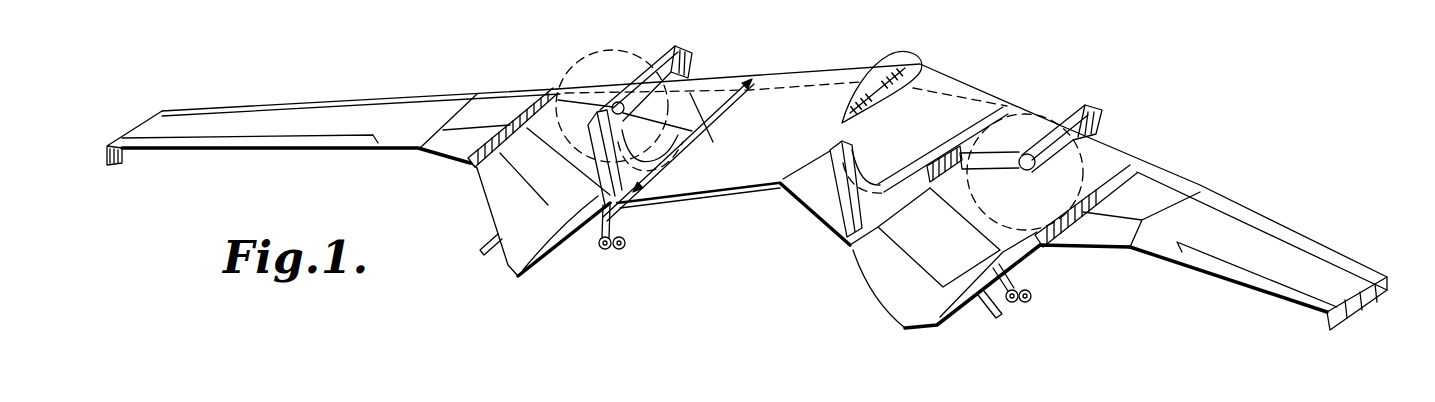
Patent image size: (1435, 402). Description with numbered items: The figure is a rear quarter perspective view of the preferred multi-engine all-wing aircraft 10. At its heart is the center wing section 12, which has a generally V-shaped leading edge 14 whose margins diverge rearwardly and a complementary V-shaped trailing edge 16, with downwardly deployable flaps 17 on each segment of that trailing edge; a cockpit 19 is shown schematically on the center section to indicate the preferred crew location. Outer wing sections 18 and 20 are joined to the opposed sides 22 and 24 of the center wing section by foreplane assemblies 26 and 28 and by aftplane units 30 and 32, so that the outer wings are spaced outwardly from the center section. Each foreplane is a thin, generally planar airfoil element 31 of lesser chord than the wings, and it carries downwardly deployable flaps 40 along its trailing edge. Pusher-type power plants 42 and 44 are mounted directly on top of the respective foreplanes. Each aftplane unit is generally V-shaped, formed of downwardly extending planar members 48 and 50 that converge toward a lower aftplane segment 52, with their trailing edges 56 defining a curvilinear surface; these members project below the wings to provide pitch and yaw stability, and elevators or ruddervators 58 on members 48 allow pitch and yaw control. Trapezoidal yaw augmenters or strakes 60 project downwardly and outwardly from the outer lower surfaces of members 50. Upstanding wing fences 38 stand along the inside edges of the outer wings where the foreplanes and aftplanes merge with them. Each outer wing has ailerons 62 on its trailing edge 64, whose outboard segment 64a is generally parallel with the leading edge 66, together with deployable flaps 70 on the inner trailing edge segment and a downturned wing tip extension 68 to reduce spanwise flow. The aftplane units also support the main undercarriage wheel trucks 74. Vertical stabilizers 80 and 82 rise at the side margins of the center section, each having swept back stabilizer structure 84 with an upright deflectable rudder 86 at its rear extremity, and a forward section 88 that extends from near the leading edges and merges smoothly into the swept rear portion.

The all-wing multi-engine aircraft 10 is at (398, 287).
The center wing section 12 is at (799, 68).
The leading edge 14 is at (847, 63).
The trailing edge 16 is at (775, 190).
The flaps 17 is at (705, 195).
The outer wing section 18 is at (272, 104).
The cockpit 19 is at (906, 62).
The outer wing section 20 is at (1240, 202).
The side of center wing section 22 is at (692, 130).
The side of center wing section 24 is at (927, 166).
The foreplane assembly 26 is at (710, 75).
The foreplane assembly 28 is at (1115, 146).
The aftplane unit 30 is at (505, 267).
The planar element 31 is at (742, 80).
The aftplane unit 32 is at (924, 338).
The wing fences 38 is at (523, 113).
The flaps 40 is at (577, 102).
The power plant 42 is at (660, 47).
The power plant 44 is at (1103, 100).
The planar member 48 is at (577, 231).
The planar member 50 is at (490, 197).
The lower aftplane segment 52 is at (527, 273).
The trailing edge 56 is at (503, 273).
The elevators or ruddervators 58 is at (543, 243).
The yaw augmenters or strakes 60 is at (482, 244).
The ailerons 62 is at (257, 142).
The trailing edge 64 is at (418, 152).
The outboard segment of trailing edge 64a is at (380, 153).
The leading edge 66 is at (352, 100).
The wing tip extension 68 is at (121, 158).
The flaps 70 is at (452, 160).
The wheel trucks 74 is at (617, 250).
The vertical stabilizer 80 is at (866, 156).
The vertical stabilizer 82 is at (636, 197).
The swept back vertical stabilizer structure 84 is at (657, 148).
The rudder 86 is at (600, 178).
The forward section of vertical stabilizer structure 88 is at (717, 97).